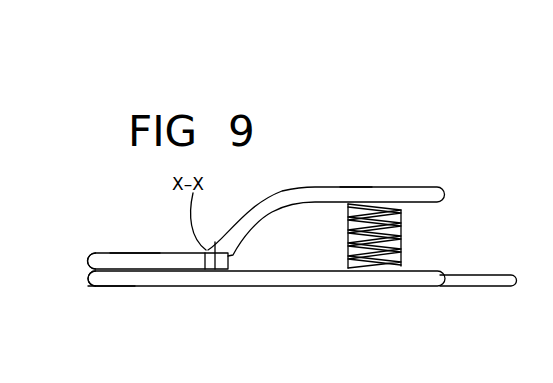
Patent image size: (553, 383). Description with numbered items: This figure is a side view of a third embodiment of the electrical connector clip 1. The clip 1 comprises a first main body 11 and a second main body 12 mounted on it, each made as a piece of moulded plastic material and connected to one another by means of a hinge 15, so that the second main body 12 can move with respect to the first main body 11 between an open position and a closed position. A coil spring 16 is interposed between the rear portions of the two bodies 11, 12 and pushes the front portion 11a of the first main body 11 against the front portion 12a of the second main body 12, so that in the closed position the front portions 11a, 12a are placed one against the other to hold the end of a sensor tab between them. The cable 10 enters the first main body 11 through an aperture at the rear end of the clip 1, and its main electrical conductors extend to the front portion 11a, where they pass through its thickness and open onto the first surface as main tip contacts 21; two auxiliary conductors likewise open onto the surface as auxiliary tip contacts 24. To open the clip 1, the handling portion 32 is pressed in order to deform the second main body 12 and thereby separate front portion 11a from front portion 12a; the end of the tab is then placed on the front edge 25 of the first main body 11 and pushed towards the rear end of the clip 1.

The electrical connector clip 1 is at (318, 161).
The cable 10 is at (473, 274).
The first main body 11 is at (388, 286).
The front portion of the first main body 11a is at (100, 286).
The second main body 12 is at (386, 185).
The front portion of the second main body 12a is at (97, 259).
The hinge 15 is at (207, 271).
The coil spring 16 is at (348, 246).
The main tip contacts 21 is at (109, 267).
The auxiliary tip contacts 24 is at (125, 267).
The front edge of the first main body 25 is at (88, 277).
The handling portion 32 is at (356, 187).